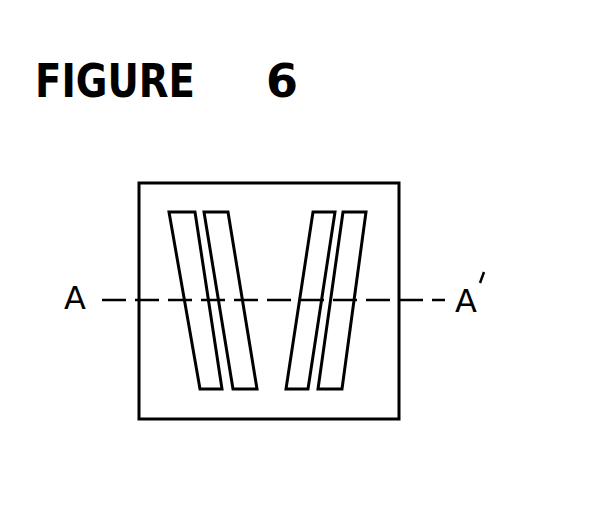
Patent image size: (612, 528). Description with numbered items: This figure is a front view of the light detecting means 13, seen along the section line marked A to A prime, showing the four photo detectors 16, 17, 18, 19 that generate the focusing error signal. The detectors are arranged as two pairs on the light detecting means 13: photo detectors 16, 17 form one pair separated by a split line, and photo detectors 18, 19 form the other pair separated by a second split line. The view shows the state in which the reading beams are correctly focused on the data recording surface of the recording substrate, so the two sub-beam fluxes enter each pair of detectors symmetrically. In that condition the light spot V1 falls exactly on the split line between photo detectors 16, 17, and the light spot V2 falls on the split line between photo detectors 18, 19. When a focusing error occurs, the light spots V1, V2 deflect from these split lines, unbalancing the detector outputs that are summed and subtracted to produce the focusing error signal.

The light detecting means 13 is at (400, 221).
The photo detector 16 is at (208, 388).
The photo detector 17 is at (242, 388).
The photo detector 18 is at (297, 388).
The photo detector 19 is at (323, 388).
The light spot V1 is at (213, 300).
The light spot V2 is at (327, 300).